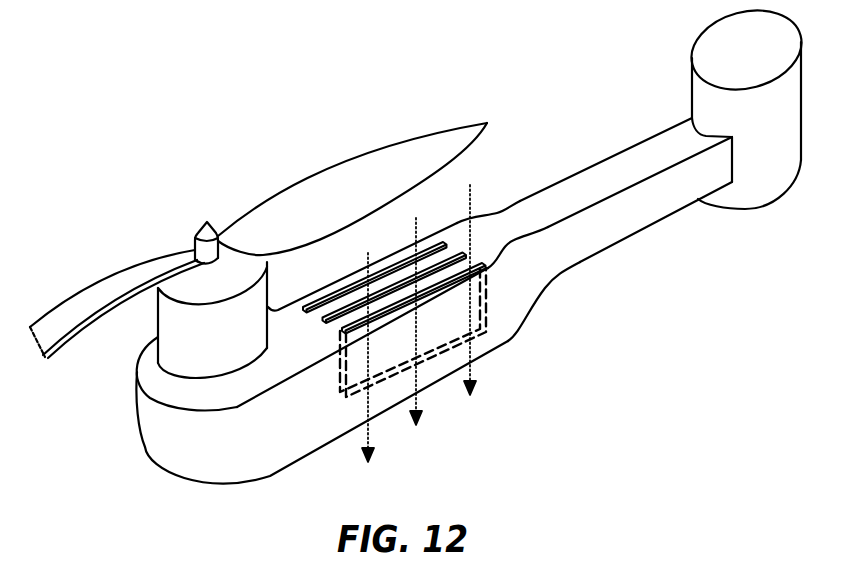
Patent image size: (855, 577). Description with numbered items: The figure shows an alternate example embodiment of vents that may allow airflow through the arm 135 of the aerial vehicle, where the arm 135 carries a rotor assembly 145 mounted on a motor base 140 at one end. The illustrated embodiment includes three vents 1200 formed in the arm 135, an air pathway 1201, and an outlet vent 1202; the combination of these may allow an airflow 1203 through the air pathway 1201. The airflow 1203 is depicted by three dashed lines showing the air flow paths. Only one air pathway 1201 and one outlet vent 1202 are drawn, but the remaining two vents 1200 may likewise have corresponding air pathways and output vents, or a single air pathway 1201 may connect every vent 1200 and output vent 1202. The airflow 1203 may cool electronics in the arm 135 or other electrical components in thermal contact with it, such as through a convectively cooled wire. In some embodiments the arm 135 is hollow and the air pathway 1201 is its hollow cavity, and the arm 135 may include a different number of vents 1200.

The arm 135 is at (633, 168).
The motor mount base 140 is at (197, 353).
The propeller rotor 145 is at (260, 231).
The vents 1200 is at (344, 327).
The air pathway 1201 is at (480, 288).
The outlet vent 1202 is at (482, 332).
The airflow 1203 is at (470, 355).